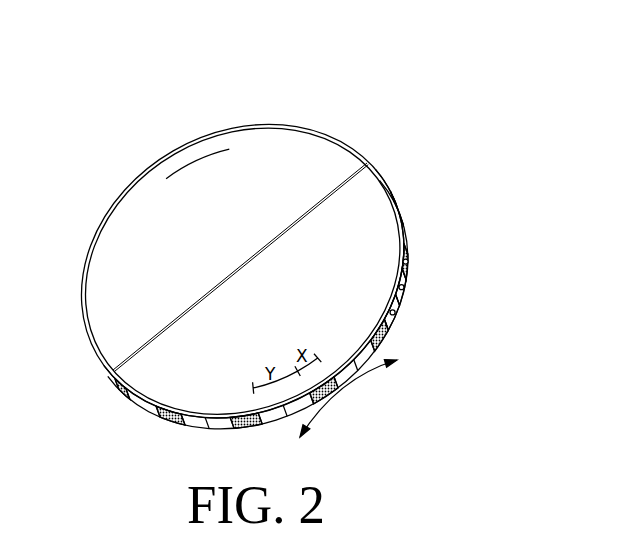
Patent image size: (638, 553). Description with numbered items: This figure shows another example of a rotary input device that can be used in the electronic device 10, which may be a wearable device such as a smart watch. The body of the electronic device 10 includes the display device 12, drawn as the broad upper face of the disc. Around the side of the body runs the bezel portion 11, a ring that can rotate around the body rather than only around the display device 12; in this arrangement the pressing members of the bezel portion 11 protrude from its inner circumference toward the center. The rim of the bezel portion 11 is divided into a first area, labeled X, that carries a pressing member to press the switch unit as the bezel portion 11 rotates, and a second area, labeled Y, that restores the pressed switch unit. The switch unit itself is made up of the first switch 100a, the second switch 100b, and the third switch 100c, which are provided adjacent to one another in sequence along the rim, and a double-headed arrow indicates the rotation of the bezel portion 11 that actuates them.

The electronic device 10 is at (283, 260).
The bezel portion 11 is at (380, 170).
The display device 12 is at (290, 155).
The first switch 100a is at (411, 257).
The second switch 100b is at (407, 283).
The third switch 100c is at (400, 308).